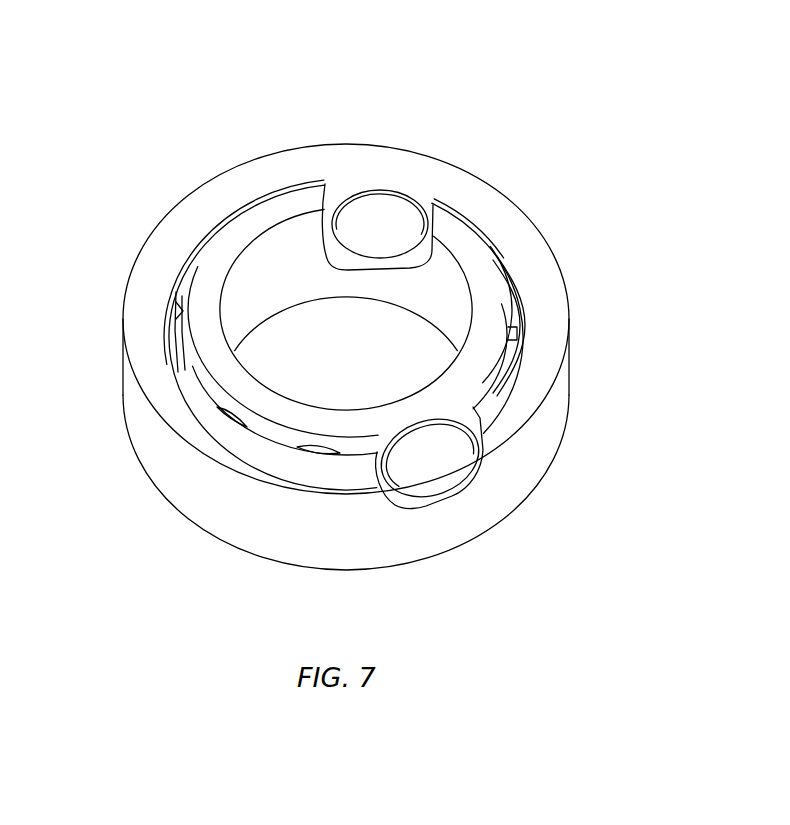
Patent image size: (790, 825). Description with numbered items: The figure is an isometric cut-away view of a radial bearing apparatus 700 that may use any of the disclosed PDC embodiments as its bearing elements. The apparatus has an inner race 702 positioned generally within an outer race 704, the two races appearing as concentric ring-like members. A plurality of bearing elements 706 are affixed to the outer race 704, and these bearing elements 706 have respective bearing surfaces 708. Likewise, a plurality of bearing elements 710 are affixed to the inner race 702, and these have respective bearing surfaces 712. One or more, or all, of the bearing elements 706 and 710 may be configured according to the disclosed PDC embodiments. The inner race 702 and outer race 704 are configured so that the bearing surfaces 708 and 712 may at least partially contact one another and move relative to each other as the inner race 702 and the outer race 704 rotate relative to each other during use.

The radial bearing apparatus 700 is at (513, 96).
The inner race 702 is at (296, 205).
The outer race 704 is at (138, 489).
The bearing elements 706 is at (416, 205).
The bearing surfaces 708 is at (383, 216).
The bearing elements 710 is at (410, 440).
The bearing surfaces 712 is at (447, 457).